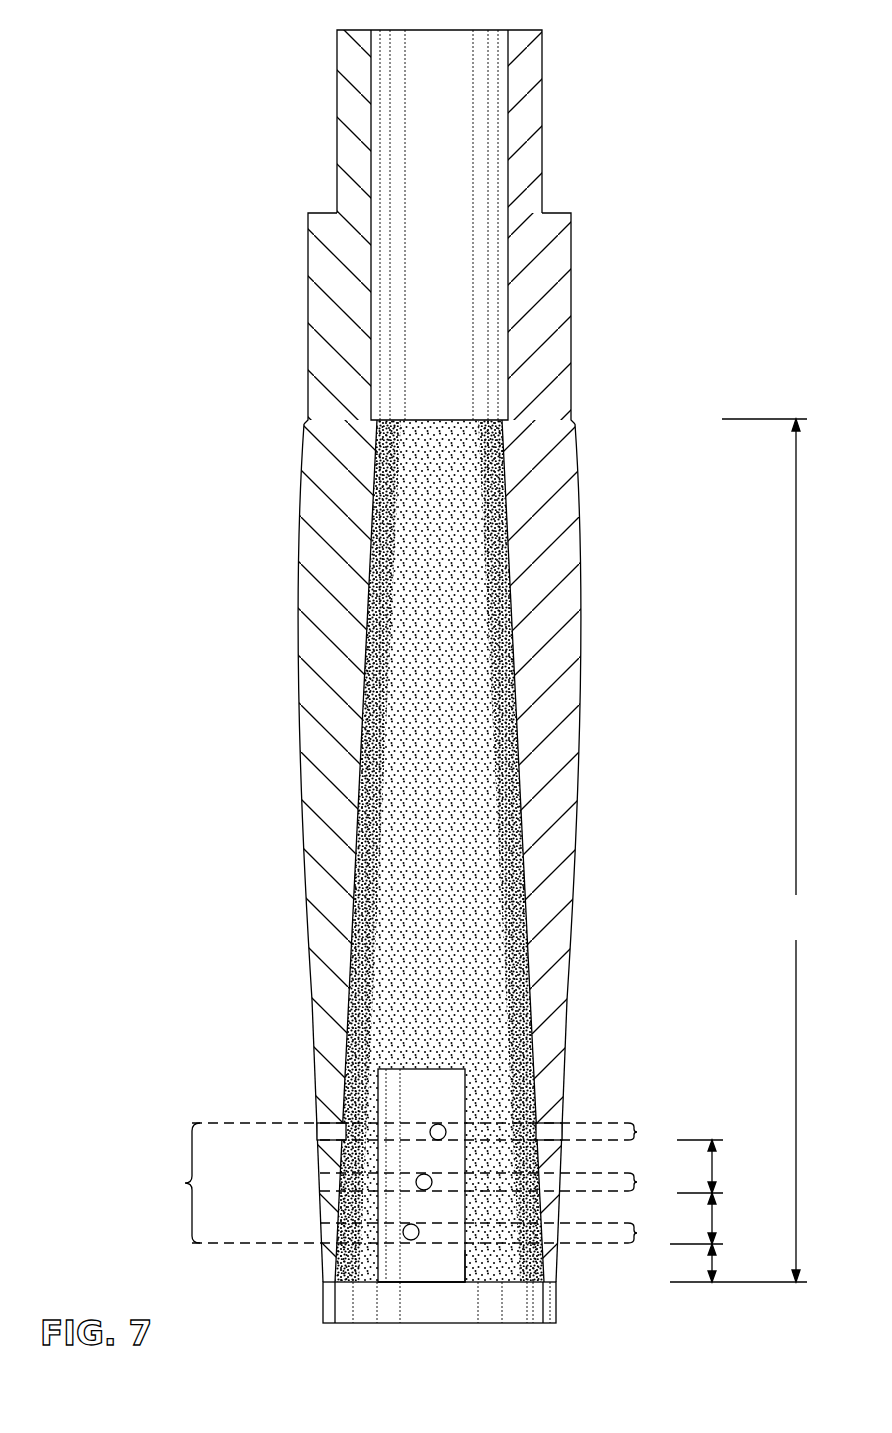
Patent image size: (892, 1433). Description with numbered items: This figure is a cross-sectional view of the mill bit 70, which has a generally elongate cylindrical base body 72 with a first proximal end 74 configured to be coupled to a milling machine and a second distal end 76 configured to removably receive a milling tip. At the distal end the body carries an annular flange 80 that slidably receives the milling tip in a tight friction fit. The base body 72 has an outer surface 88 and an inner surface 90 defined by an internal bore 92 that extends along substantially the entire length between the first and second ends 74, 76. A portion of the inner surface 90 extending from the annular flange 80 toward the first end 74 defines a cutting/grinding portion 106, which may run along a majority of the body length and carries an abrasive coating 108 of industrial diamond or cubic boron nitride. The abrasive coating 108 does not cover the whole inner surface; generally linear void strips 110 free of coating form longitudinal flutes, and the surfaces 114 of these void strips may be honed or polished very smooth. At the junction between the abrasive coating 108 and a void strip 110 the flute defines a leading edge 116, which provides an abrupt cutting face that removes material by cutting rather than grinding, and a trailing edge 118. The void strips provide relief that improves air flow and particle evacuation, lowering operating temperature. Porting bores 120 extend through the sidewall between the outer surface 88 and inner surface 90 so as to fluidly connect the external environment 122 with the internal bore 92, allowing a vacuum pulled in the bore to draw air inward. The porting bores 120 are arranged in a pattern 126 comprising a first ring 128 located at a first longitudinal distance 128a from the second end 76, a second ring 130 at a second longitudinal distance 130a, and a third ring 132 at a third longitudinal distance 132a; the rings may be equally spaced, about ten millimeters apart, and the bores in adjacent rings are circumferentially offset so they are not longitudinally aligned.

The mill bit 70 is at (288, 46).
The cylindrical base body 72 is at (308, 298).
The first proximal end 74 is at (542, 62).
The second distal end 76 is at (323, 1302).
The annular flange 80 is at (556, 1300).
The outer surface 88 is at (298, 697).
The inner surface 90 is at (496, 658).
The internal bore 92 is at (434, 45).
The cutting/grinding portion 106 is at (741, 850).
The abrasive coating 108 is at (455, 570).
The void strips 110 is at (445, 1097).
The surfaces of the void strips 114 is at (413, 1086).
The leading edge 116 is at (462, 1262).
The trailing edge 118 is at (388, 1198).
The porting bores 120 is at (416, 1182).
The external environment 122 is at (375, 1130).
The pattern of porting bores 126 is at (387, 1183).
The first ring 128 is at (500, 1234).
The second ring 130 is at (500, 1184).
The third ring 132 is at (500, 1133).
The first longitudinal distance 128a is at (741, 1263).
The second longitudinal distance 130a is at (722, 1218).
The third longitudinal distance 132a is at (726, 1166).